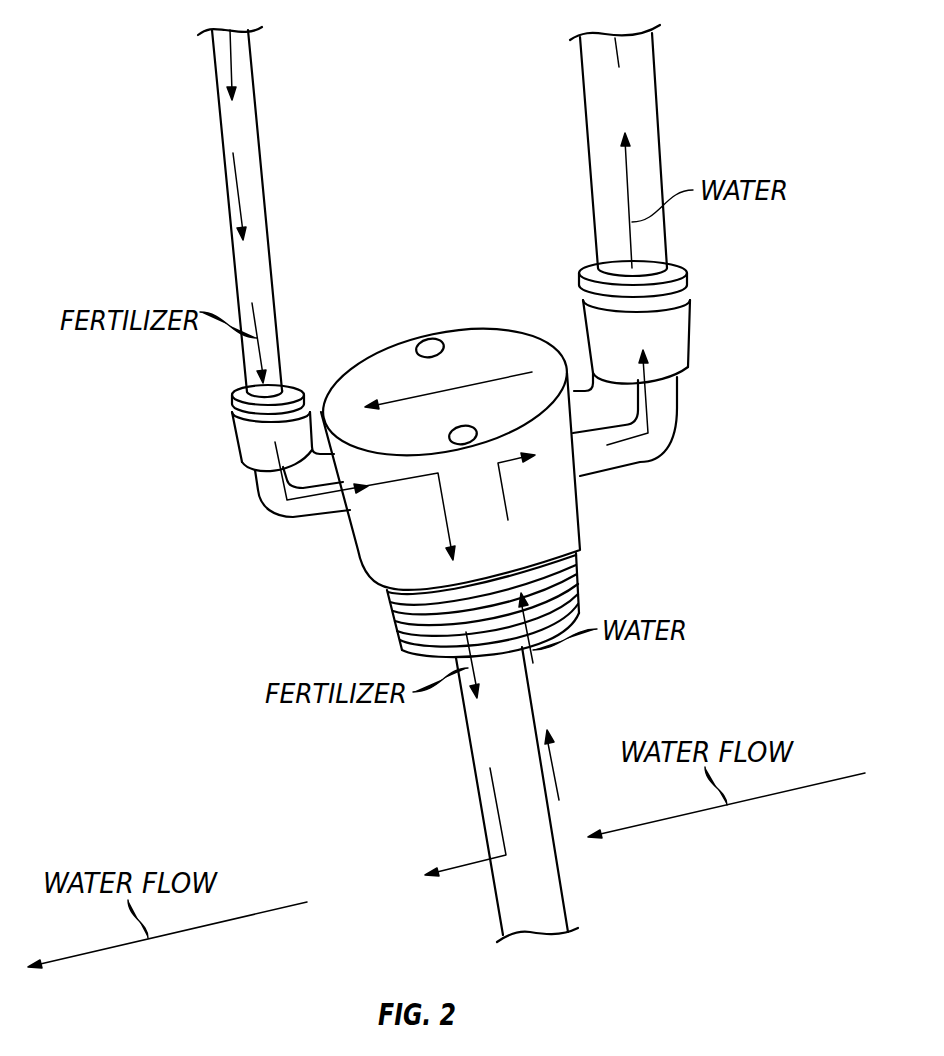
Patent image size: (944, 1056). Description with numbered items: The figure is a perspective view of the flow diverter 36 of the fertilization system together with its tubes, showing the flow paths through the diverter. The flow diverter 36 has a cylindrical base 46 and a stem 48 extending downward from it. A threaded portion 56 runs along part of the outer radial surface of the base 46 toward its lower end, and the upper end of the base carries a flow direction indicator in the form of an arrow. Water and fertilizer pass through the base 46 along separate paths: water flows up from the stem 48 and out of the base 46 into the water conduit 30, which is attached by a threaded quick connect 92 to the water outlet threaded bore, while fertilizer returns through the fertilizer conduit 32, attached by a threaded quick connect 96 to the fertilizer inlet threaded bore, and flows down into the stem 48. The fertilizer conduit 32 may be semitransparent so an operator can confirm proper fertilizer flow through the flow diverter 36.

The water conduit 30 is at (627, 97).
The fertilizer conduit 32 is at (232, 128).
The flow diverter 36 is at (488, 459).
The cylindrical base 46 is at (543, 502).
The stem 48 is at (540, 878).
The threaded portion 56 is at (388, 608).
The threaded quick connect 92 is at (667, 342).
The threaded quick connect 96 is at (257, 440).